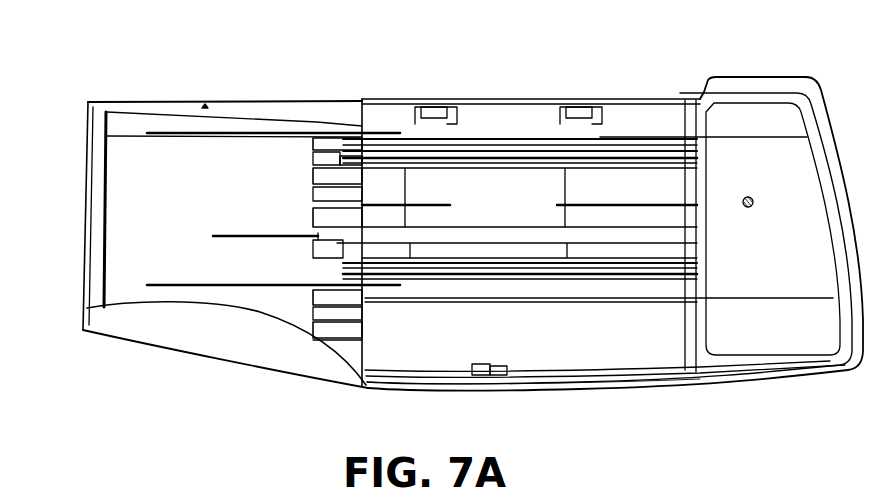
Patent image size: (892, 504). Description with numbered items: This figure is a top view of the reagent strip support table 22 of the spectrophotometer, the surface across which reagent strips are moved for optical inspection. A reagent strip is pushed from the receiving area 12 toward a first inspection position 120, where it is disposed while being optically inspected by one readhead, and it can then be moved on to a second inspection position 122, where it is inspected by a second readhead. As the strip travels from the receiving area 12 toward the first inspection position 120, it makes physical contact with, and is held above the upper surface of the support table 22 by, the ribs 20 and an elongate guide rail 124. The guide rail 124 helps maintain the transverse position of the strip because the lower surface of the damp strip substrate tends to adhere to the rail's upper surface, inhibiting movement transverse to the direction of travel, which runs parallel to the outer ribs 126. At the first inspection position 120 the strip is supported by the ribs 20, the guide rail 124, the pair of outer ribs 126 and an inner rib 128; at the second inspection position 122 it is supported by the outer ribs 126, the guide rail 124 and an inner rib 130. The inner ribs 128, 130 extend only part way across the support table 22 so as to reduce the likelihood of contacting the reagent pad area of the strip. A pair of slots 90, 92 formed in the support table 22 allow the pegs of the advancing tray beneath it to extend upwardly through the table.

The receiving area 12 is at (279, 92).
The reagent strip support table 22 is at (133, 90).
The ribs 20 is at (275, 138).
The slot 90 is at (496, 150).
The slot 92 is at (693, 268).
The first inspection position 120 is at (386, 318).
The second inspection position 122 is at (585, 316).
The elongate guide rail 124 is at (340, 233).
The outer ribs 126 is at (636, 135).
The inner rib 128 is at (430, 200).
The inner rib 130 is at (585, 203).